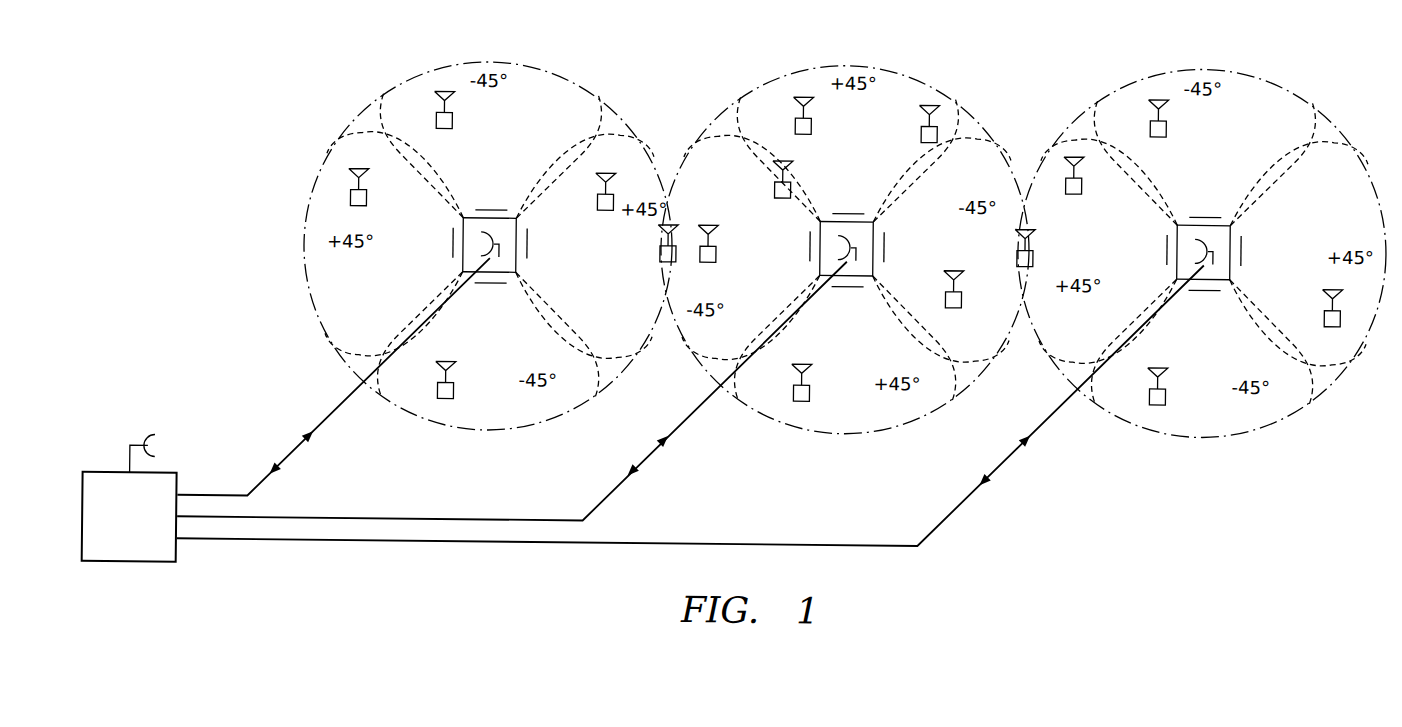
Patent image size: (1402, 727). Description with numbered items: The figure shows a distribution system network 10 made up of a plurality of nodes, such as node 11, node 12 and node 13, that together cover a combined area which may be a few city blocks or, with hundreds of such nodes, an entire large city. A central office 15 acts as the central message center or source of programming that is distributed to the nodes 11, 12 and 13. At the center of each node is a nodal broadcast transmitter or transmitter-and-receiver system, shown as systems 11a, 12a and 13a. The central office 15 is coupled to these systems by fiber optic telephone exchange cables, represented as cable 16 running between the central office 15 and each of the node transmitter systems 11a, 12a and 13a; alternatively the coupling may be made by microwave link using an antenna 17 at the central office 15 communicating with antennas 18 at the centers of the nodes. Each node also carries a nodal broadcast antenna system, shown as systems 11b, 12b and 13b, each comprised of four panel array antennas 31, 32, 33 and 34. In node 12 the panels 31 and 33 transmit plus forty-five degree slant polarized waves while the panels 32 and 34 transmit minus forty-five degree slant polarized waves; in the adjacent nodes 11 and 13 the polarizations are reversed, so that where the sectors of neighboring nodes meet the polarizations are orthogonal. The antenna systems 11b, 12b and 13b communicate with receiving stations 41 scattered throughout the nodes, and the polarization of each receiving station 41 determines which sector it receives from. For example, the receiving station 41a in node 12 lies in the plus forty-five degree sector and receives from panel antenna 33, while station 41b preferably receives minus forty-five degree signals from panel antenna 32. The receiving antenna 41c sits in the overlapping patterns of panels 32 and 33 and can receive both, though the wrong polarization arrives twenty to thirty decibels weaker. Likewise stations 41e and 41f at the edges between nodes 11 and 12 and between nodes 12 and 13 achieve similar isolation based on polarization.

The distribution system network 10 is at (189, 131).
The node 11 is at (372, 99).
The nodal broadcast transmitter system 11a is at (520, 182).
The node broadcast transmitting antenna system 11b is at (500, 302).
The node 12 is at (730, 99).
The nodal broadcast transmitter system 12a is at (847, 159).
The nodal transmitter coverage or broadcast antenna system 12b is at (845, 339).
The node 13 is at (1086, 99).
The nodal broadcast transmitter system 13a is at (1204, 162).
The node broadcast transmitting antenna system 13b is at (1202, 342).
The central office 15 is at (134, 566).
The cable 16 is at (262, 486).
The antenna 17 is at (132, 455).
The antenna 18 is at (486, 231).
The panel array antenna 31 is at (480, 284).
The panel array antenna 32 is at (452, 252).
The panel array antenna 33 is at (488, 209).
The panel array antenna 34 is at (528, 237).
The receiving station 41 is at (451, 122).
The receiving station 41a is at (829, 116).
The receiving station 41b is at (735, 244).
The receiving antenna 41c is at (752, 179).
The receiving station 41e is at (658, 258).
The receiving station 41f is at (997, 248).